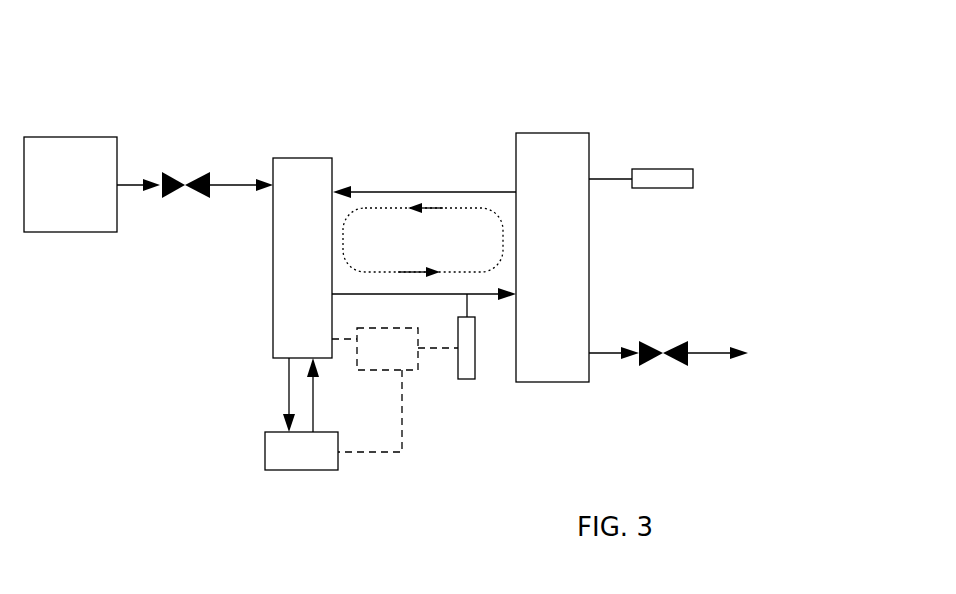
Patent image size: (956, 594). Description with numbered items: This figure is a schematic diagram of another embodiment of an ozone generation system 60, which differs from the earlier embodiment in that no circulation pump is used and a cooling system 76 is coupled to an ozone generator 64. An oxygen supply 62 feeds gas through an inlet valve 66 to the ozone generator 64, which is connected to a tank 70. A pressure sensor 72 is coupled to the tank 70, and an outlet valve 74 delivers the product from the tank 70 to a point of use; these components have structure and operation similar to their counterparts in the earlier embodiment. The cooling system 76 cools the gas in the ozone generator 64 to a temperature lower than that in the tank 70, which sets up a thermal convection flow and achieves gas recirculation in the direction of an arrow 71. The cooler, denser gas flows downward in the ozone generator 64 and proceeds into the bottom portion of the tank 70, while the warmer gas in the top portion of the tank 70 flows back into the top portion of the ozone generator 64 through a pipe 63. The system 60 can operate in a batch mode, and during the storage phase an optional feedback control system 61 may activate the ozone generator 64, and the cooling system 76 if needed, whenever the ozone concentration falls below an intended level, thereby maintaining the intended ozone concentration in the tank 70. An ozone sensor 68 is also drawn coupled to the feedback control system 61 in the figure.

The ozone generation system 60 is at (96, 64).
The feedback control system 61 is at (395, 390).
The oxygen supply 62 is at (60, 221).
The pipe 63 is at (393, 192).
The ozone generator 64 is at (273, 285).
The inlet valve 66 is at (173, 173).
The ozone sensor 68 is at (464, 380).
The tank 70 is at (542, 199).
The arrow 71 is at (382, 271).
The pressure sensor 72 is at (663, 168).
The outlet valve 74 is at (677, 360).
The cooling system 76 is at (265, 450).